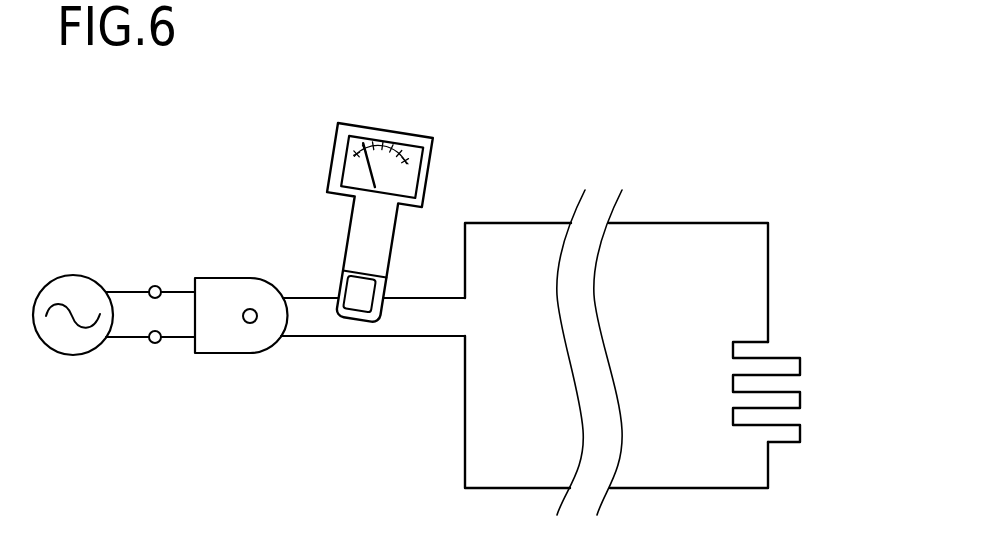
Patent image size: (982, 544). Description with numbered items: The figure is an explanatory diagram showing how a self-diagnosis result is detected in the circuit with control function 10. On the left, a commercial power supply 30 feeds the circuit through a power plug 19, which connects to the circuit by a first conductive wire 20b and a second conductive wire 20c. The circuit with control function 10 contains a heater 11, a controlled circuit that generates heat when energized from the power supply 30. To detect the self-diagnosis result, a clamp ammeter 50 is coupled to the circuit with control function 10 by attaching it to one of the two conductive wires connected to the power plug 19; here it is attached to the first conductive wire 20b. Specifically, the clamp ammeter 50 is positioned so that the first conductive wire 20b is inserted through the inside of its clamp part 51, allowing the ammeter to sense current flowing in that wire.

The circuit with control function 10 is at (786, 267).
The heater 11 is at (800, 367).
The power plug 19 is at (215, 343).
The first conductive wire 20b is at (307, 297).
The second conductive wire 20c is at (308, 338).
The commercial power supply 30 is at (77, 278).
The clamp ammeter 50 is at (402, 137).
The clamp part 51 is at (360, 318).